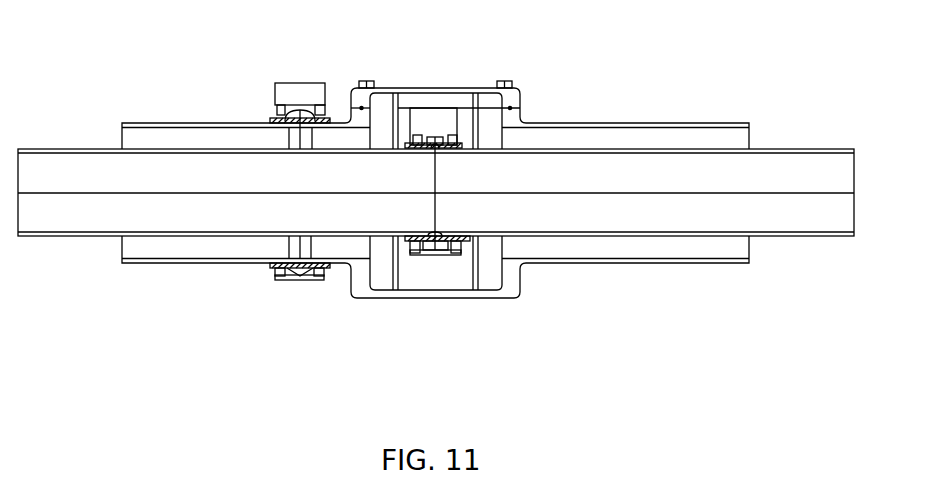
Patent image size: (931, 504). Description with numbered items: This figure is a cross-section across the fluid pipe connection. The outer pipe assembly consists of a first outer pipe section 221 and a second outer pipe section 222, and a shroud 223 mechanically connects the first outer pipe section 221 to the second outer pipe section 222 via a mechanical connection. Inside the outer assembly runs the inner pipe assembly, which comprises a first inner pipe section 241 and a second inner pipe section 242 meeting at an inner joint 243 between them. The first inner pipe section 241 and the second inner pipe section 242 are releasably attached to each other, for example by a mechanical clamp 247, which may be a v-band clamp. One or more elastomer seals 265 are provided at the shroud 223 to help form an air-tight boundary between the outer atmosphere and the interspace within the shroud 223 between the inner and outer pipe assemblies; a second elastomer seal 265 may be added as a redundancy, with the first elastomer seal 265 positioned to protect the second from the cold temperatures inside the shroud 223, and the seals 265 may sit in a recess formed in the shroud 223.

The first outer pipe section 221 is at (188, 264).
The second outer pipe section 222 is at (613, 264).
The shroud 223 is at (508, 287).
The first inner pipe section 241 is at (203, 142).
The second inner pipe section 242 is at (660, 163).
The inner joint 243 is at (468, 129).
The mechanical clamp 247 is at (445, 136).
The elastomer seal 265 is at (362, 107).